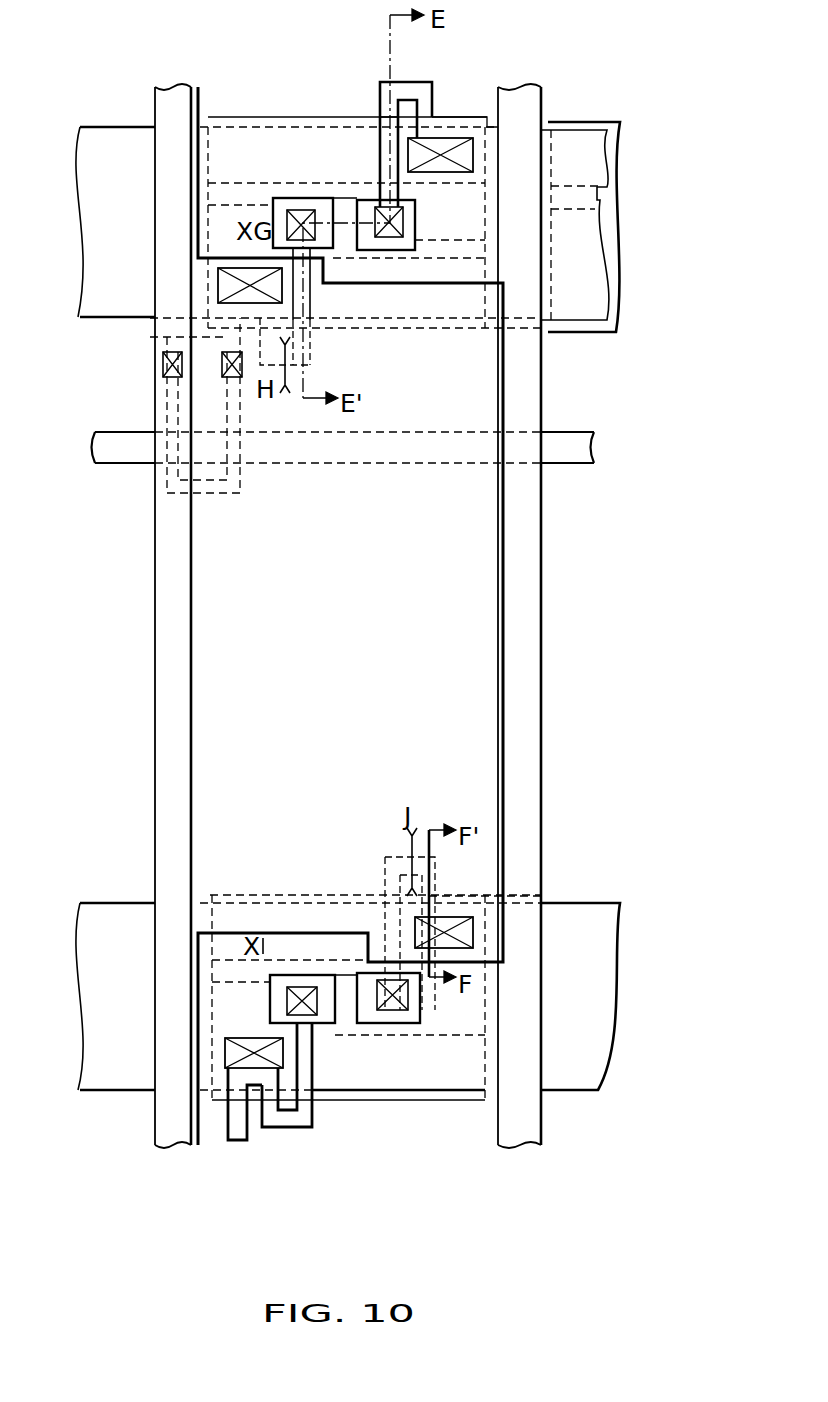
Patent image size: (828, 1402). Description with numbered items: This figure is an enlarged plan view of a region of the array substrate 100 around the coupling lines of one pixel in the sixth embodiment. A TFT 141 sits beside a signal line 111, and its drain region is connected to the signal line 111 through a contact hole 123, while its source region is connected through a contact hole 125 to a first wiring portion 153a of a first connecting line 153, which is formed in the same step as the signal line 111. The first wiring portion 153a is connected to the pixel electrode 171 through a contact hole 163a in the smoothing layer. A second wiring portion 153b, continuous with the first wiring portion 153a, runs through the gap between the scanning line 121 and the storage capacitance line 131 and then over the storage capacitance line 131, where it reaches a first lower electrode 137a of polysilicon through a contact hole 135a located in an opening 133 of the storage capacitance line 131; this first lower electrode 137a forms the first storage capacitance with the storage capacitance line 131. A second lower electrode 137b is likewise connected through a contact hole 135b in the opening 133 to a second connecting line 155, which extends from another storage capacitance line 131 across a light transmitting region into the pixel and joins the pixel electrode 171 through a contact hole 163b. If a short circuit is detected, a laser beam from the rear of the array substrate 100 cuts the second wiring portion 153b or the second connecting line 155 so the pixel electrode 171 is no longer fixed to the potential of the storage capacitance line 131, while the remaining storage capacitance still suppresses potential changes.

The array substrate 100 is at (626, 172).
The signal line 111 is at (177, 95).
The scanning line 121 is at (580, 454).
The contact hole 123 is at (162, 363).
The contact hole 125 is at (222, 373).
The storage capacitance line 131 is at (118, 135).
The opening 133 is at (346, 198).
The contact hole 135a is at (294, 210).
The contact hole 135b is at (407, 220).
The first lower electrode 137a is at (460, 330).
The second lower electrode 137b is at (448, 137).
The TFT 141 is at (238, 440).
The first connecting line 153 is at (226, 791).
The first wiring portion 153a is at (157, 344).
The second wiring portion 153b is at (307, 345).
The second connecting line 155 is at (415, 83).
The contact hole 163a is at (233, 268).
The contact hole 163b is at (448, 145).
The pixel electrode 171 is at (523, 664).